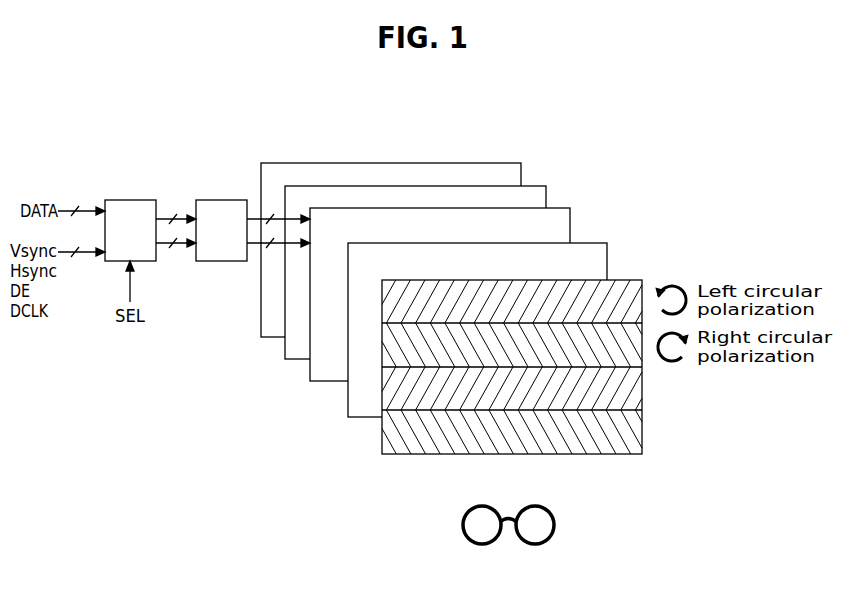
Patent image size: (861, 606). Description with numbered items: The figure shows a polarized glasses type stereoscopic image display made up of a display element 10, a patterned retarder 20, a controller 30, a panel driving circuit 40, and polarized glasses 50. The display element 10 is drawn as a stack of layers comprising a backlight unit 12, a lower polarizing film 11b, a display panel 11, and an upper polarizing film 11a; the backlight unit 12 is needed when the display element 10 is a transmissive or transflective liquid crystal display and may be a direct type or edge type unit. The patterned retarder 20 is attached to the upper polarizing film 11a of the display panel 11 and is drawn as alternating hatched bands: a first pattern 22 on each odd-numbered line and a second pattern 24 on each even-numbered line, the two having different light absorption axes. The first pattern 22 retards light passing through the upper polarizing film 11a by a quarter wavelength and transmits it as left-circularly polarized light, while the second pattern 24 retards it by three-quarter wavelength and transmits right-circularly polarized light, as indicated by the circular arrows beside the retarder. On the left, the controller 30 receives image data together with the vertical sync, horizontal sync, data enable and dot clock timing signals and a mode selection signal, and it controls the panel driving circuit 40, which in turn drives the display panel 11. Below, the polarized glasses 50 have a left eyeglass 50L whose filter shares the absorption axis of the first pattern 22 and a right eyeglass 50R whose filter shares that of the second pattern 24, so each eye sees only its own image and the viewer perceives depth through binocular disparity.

The display element 10 is at (449, 263).
The display panel 11 is at (565, 208).
The upper polarizing film 11a is at (492, 308).
The lower polarizing film 11b is at (532, 186).
The backlight unit 12 is at (512, 163).
The patterned retarder 20 is at (543, 345).
The first pattern 22 is at (643, 388).
The second pattern 24 is at (643, 430).
The controller 30 is at (139, 239).
The panel driving circuit 40 is at (230, 239).
The polarized glasses 50 is at (549, 550).
The left eyeglass 50L is at (481, 545).
The right eyeglass 50R is at (535, 545).